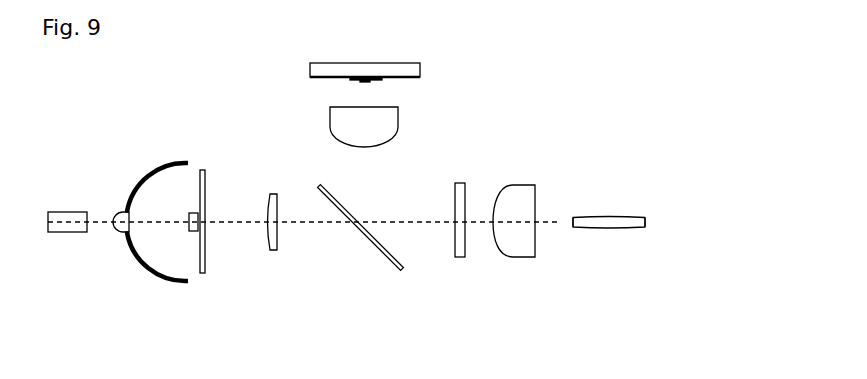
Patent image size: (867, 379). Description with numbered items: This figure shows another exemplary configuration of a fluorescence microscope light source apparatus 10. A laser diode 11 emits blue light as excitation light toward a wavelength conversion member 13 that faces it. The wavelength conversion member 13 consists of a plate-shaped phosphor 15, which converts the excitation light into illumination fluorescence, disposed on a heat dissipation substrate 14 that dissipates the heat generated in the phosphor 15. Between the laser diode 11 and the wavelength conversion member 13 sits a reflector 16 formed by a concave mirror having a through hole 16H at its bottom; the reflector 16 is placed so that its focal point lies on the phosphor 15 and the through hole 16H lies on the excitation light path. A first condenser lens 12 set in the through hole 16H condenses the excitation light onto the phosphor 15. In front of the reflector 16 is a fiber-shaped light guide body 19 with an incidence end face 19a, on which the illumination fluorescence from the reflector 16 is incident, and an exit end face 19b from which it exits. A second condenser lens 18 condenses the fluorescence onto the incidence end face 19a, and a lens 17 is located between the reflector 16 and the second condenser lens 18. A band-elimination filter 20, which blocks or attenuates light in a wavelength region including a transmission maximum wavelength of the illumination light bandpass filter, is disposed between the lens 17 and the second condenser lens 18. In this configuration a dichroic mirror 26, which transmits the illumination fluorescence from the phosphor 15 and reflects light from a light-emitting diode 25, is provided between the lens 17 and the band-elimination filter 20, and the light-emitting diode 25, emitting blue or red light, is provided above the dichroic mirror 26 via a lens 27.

The light source apparatus 10 is at (452, 283).
The laser diode 11 is at (68, 210).
The first condenser lens 12 is at (117, 210).
The wavelength conversion member 13 is at (196, 284).
The heat dissipation substrate 14 is at (206, 190).
The phosphor 15 is at (193, 211).
The reflector 16 is at (157, 166).
The through hole 16H is at (118, 233).
The lens 17 is at (270, 192).
The second condenser lens 18 is at (522, 185).
The light guide body 19 is at (605, 217).
The incidence end face 19a is at (573, 222).
The exit end face 19b is at (645, 222).
The band-elimination filter 20 is at (462, 181).
The light-emitting diode 25 is at (386, 80).
The dichroic mirror 26 is at (350, 208).
The lens 27 is at (398, 118).